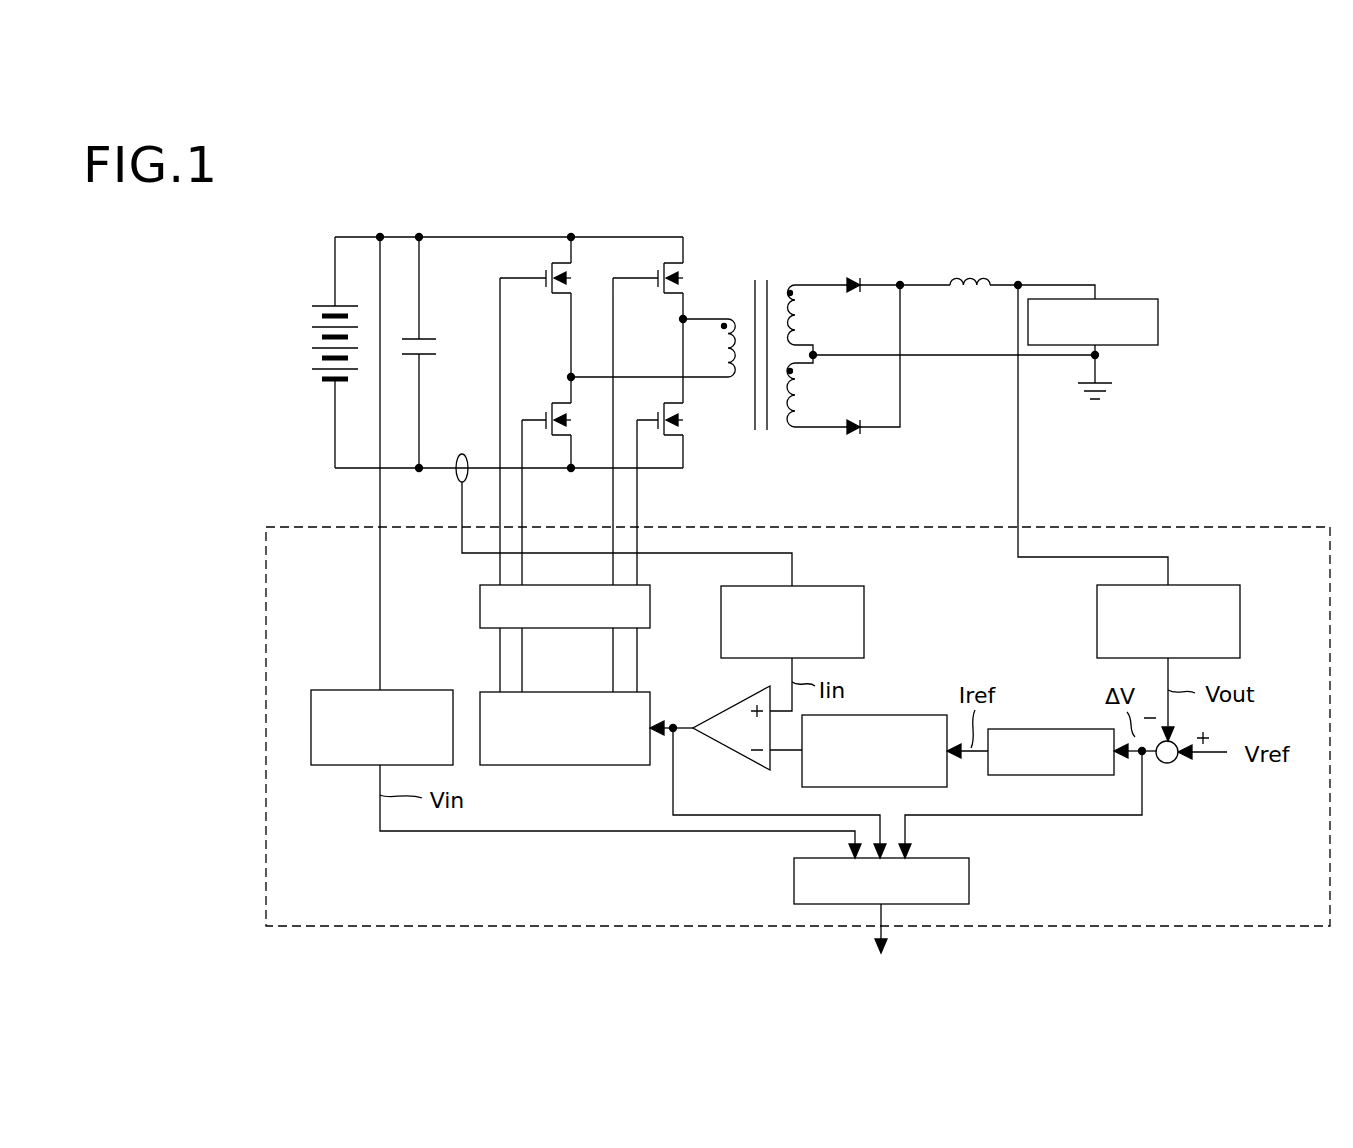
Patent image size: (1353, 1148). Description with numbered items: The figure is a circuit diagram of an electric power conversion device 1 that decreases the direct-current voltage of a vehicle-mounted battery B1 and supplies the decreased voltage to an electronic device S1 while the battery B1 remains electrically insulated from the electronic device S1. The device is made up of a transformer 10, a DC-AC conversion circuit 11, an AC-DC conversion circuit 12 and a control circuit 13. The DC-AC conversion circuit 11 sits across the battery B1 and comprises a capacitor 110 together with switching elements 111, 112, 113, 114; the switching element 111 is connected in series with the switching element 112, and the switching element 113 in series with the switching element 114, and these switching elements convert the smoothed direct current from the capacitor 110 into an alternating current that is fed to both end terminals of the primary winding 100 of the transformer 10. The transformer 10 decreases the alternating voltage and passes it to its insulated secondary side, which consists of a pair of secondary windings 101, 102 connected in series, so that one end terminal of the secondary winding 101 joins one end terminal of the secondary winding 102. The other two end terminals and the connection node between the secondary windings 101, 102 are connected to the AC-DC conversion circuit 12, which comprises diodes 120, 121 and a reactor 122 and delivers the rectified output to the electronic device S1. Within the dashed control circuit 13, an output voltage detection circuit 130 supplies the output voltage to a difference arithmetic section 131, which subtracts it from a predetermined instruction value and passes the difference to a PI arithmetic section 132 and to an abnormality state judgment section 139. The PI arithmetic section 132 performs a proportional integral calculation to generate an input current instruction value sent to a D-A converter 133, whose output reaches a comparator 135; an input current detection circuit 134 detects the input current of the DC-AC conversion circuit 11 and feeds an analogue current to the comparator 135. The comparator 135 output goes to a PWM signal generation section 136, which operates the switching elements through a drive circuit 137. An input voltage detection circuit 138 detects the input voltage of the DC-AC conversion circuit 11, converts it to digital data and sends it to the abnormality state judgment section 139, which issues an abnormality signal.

The electric power conversion device 1 is at (1152, 190).
The transformer 10 is at (757, 275).
The DC-AC conversion circuit 11 is at (462, 195).
The AC-DC conversion circuit 12 is at (941, 218).
The control circuit 13 is at (1135, 523).
The primary winding 100 is at (733, 386).
The secondary winding 101 is at (795, 282).
The secondary winding 102 is at (793, 433).
The capacitor 110 is at (428, 338).
The switching element 111 is at (545, 274).
The switching element 112 is at (546, 415).
The switching element 113 is at (657, 274).
The switching element 114 is at (658, 415).
The diode 120 is at (851, 278).
The diode 121 is at (851, 422).
The reactor 122 is at (968, 272).
The output voltage detection circuit 130 is at (1210, 584).
The difference arithmetic section 131 is at (1172, 764).
The PI arithmetic section 132 is at (1050, 776).
The D-A converter 133 is at (900, 714).
The input current detection circuit 134 is at (824, 585).
The comparator 135 is at (712, 712).
The PWM signal generation section 136 is at (570, 766).
The drive circuit 137 is at (650, 598).
The input voltage detection circuit 138 is at (334, 689).
The abnormality state judgment section 139 is at (970, 882).
The battery B1 is at (333, 305).
The electronic device S1 is at (1132, 298).